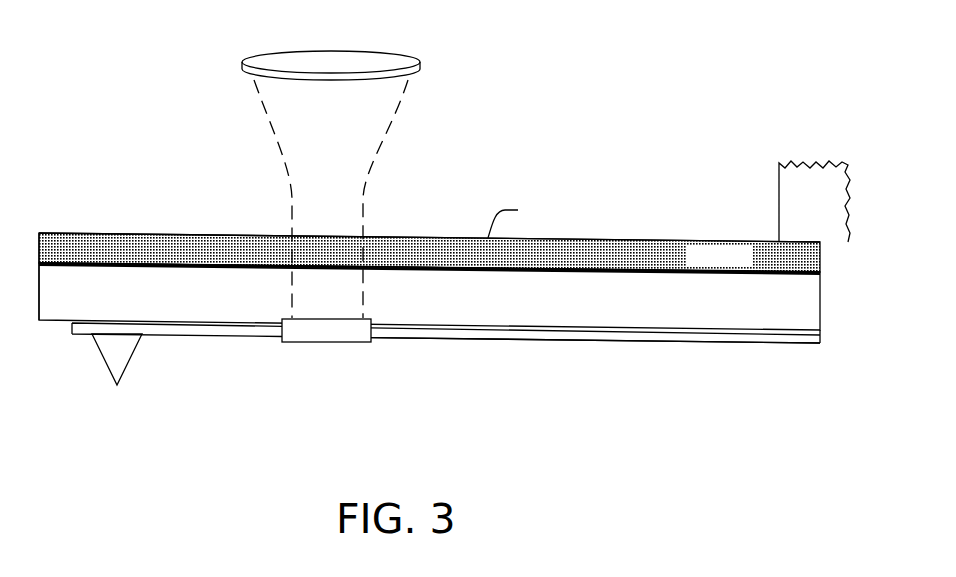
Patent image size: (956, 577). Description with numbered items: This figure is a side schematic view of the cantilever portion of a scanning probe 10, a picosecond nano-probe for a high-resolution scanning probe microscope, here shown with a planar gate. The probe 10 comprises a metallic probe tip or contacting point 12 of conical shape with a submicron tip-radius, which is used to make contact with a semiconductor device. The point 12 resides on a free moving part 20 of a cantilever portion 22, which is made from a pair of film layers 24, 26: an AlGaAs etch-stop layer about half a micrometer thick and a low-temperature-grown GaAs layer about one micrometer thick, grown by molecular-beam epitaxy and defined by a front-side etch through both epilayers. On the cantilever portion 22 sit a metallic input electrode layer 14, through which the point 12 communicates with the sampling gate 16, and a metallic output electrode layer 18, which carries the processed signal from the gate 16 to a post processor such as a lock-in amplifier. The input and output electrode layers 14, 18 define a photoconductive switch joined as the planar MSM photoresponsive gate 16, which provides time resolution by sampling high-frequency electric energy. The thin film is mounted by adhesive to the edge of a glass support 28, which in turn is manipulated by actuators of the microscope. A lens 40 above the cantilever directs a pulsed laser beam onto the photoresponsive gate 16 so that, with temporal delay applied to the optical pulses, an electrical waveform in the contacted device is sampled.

The scanning probe 10 is at (646, 66).
The probe tip 12 is at (130, 360).
The input electrode layer 14 is at (232, 337).
The gate 16 is at (348, 350).
The output electrode layer 18 is at (615, 341).
The free moving part 20 is at (42, 321).
The cantilever portion 22 is at (422, 233).
The film layer 24 is at (822, 256).
The film layer 26 is at (822, 312).
The glass support 28 is at (778, 191).
The lens 40 is at (420, 66).